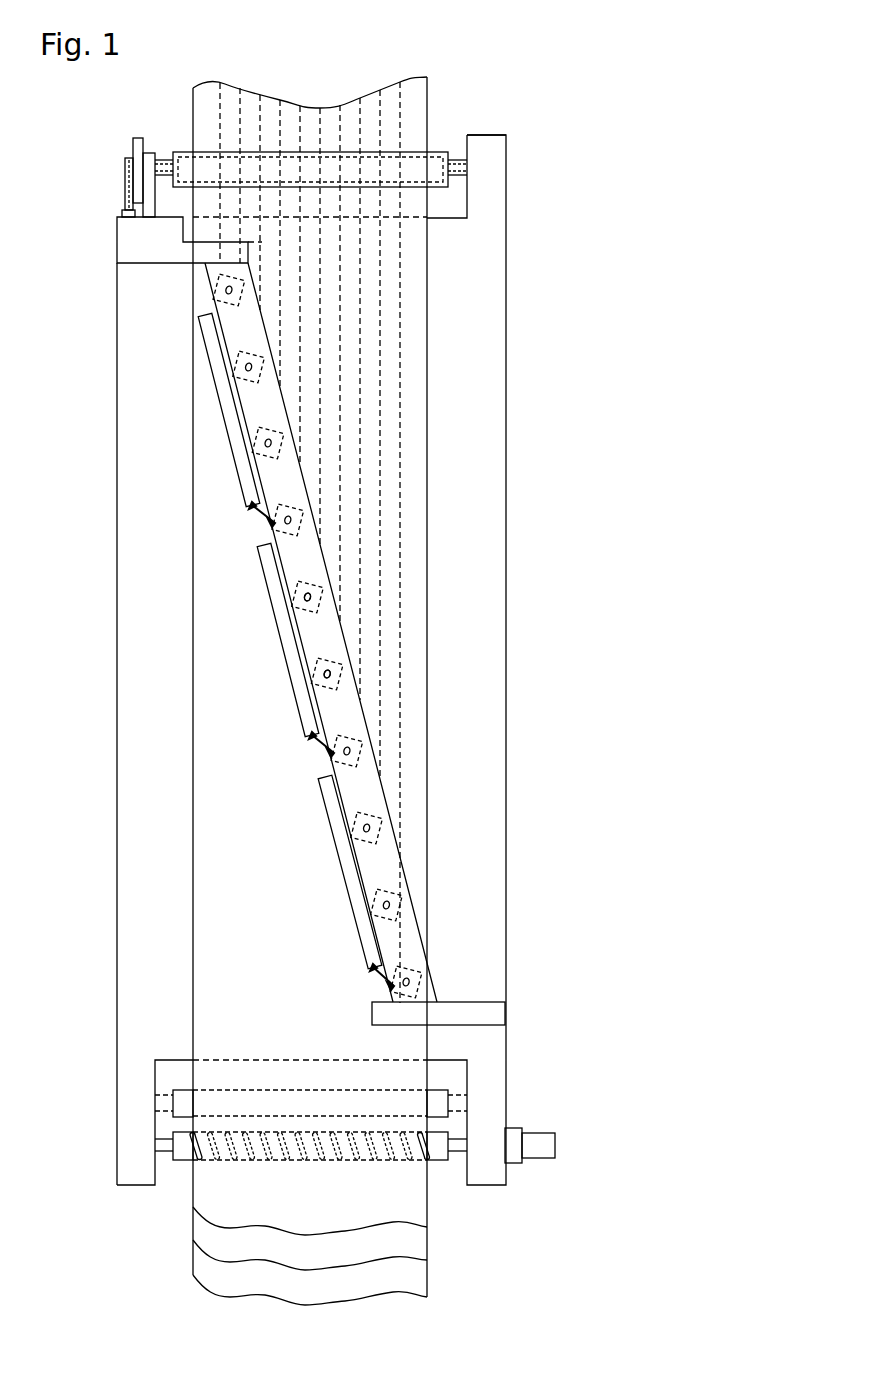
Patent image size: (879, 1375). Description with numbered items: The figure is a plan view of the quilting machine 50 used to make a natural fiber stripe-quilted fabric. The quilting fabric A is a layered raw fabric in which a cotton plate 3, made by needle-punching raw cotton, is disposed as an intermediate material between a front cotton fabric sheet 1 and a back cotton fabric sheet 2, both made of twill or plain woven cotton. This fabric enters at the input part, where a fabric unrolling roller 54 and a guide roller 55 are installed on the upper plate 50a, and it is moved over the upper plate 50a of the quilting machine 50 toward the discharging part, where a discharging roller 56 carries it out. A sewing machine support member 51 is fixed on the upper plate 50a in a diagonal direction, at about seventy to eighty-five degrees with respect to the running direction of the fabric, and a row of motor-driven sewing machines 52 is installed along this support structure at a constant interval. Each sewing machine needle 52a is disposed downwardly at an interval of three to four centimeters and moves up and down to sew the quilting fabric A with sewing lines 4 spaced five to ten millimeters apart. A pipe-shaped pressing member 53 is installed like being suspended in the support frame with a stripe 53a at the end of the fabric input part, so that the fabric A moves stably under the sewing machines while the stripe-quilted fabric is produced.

The cotton fabric sheet 1 is at (410, 1197).
The cotton fabric sheet 2 is at (417, 1280).
The cotton plate 3 is at (417, 1242).
The sewing line 4 is at (400, 270).
The quilting fabric A is at (507, 1208).
The quilting machine 50 is at (513, 897).
The upper plate 50a is at (450, 797).
The support member 51 is at (323, 630).
The sewing machine 52 is at (305, 585).
The sewing machine needle 52a is at (305, 598).
The pressing member 53 is at (263, 568).
The stripe 53a is at (310, 738).
The fabric unrolling roller 54 is at (438, 1140).
The guide roller 55 is at (412, 150).
The discharging roller 56 is at (445, 148).